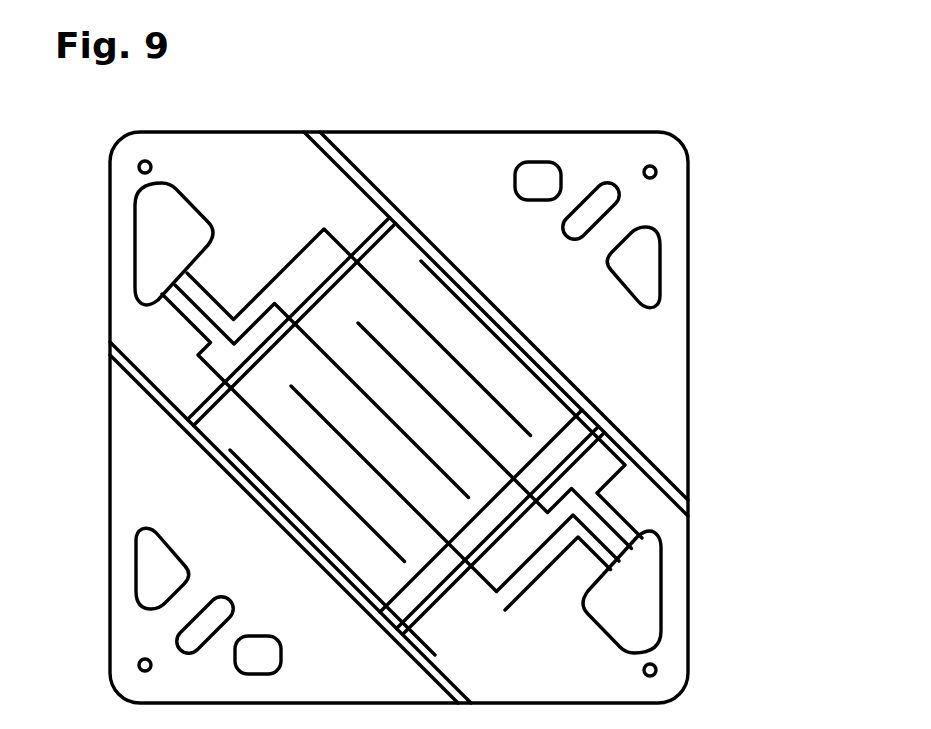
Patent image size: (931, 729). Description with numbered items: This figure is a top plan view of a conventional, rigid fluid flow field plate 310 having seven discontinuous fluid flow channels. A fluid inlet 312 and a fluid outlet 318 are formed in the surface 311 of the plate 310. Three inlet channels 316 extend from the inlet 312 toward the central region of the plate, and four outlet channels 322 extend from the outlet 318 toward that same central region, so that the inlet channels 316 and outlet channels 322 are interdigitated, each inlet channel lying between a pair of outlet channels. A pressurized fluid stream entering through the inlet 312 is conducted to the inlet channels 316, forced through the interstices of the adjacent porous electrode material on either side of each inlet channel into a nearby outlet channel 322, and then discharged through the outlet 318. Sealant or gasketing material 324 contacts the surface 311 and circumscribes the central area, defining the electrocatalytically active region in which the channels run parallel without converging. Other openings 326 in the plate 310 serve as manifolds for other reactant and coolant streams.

The fluid flow field plate 310 is at (489, 132).
The surface 311 is at (238, 153).
The fluid inlet 312 is at (150, 232).
The inlet channels 316 is at (200, 440).
The fluid outlet 318 is at (648, 571).
The outlet channels 322 is at (483, 508).
The sealant or gasketing material 324 is at (437, 607).
The other openings 326 is at (552, 173).